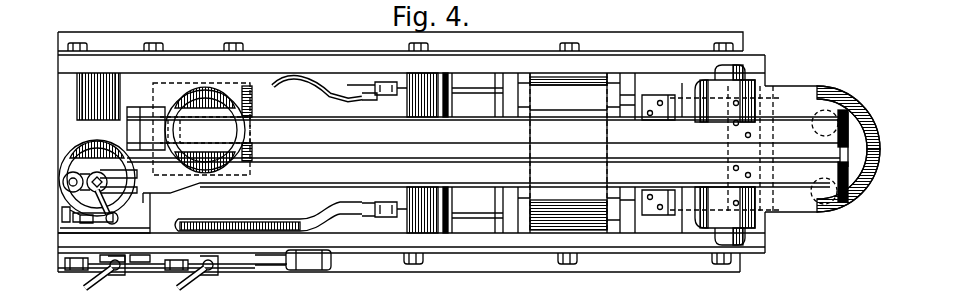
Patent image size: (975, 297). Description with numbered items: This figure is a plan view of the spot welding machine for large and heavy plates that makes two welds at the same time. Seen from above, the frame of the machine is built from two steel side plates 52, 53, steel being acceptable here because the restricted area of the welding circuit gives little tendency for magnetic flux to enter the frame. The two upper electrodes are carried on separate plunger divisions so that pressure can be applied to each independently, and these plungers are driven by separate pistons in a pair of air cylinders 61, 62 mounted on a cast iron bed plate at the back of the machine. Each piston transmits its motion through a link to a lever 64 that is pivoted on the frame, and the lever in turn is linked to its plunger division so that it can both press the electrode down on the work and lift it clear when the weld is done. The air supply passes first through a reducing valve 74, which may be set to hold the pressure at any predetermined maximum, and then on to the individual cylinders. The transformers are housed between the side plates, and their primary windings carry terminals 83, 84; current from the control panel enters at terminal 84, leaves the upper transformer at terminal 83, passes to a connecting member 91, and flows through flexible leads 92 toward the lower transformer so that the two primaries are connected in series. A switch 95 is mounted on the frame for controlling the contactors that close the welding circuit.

The steel side plate 52 is at (273, 60).
The steel side plate 53 is at (380, 243).
The air cylinder 61 is at (67, 163).
The air cylinder 62 is at (247, 118).
The lever 64 is at (277, 178).
The reducing valve 74 is at (63, 190).
The primary winding terminal 83 is at (468, 215).
The primary winding terminal 84 is at (468, 88).
The connecting member 91 is at (381, 212).
The flexible leads 92 is at (207, 222).
The switch 95 is at (289, 271).